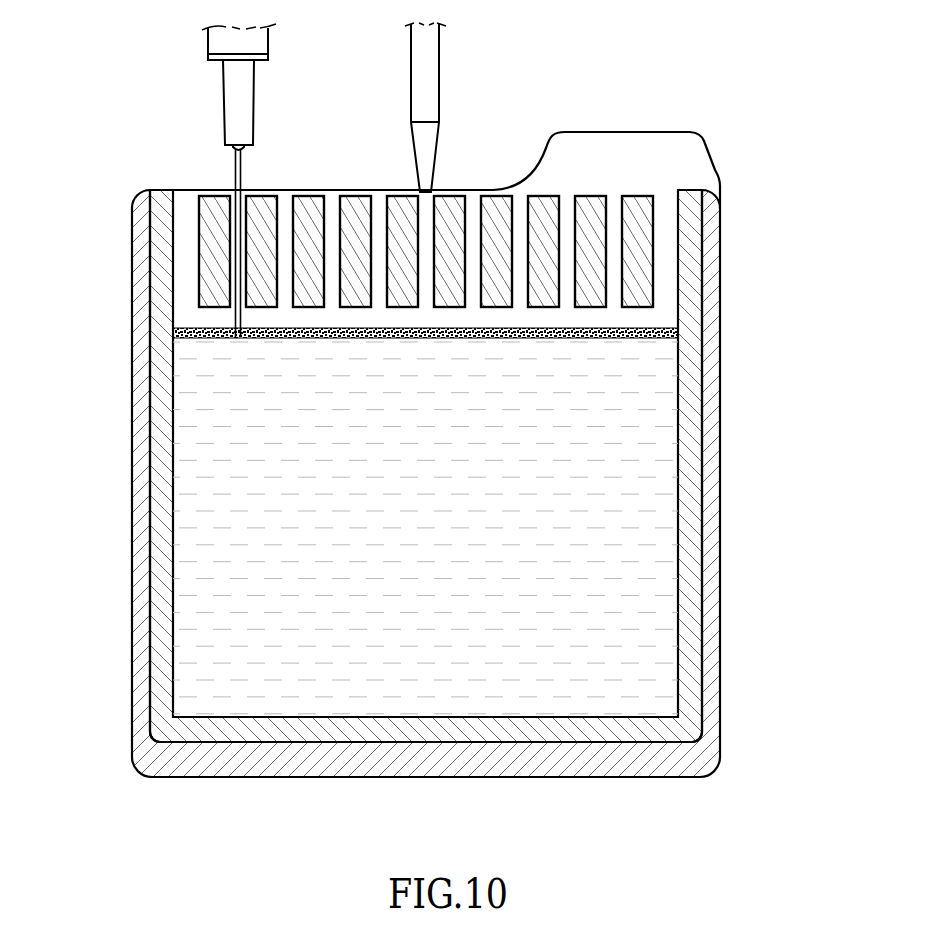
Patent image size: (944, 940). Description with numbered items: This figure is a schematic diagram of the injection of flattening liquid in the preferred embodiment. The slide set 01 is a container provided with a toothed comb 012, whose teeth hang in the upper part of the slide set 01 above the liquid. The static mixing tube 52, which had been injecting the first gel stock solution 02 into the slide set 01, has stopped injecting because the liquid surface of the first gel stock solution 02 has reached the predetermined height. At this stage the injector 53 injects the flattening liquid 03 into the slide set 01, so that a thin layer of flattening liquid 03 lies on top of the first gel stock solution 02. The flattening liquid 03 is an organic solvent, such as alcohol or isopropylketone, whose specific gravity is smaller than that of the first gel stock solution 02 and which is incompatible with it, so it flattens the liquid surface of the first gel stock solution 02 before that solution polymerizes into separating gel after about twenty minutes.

The slide set 01 is at (722, 483).
The first gel stock solution 02 is at (608, 565).
The flattening liquid 03 is at (173, 333).
The toothed comb 012 is at (637, 257).
The static mixing tube 52 is at (427, 73).
The injector 53 is at (230, 108).